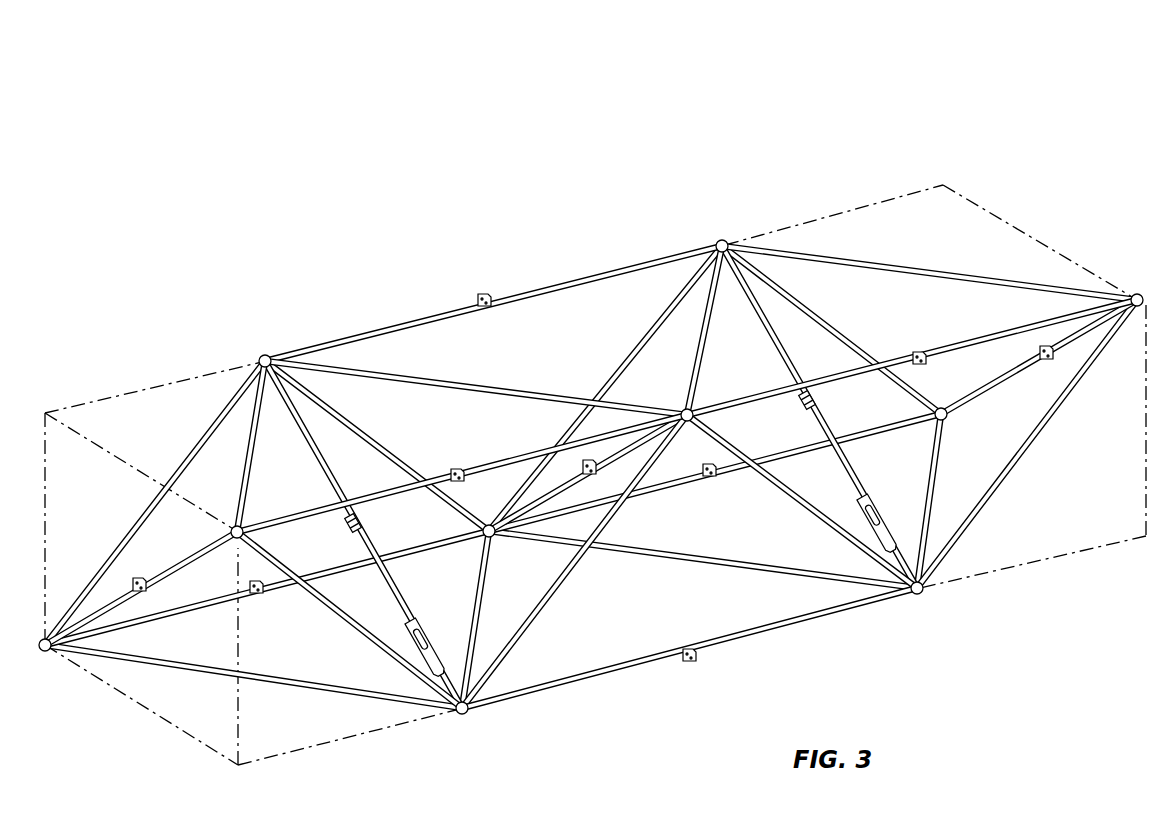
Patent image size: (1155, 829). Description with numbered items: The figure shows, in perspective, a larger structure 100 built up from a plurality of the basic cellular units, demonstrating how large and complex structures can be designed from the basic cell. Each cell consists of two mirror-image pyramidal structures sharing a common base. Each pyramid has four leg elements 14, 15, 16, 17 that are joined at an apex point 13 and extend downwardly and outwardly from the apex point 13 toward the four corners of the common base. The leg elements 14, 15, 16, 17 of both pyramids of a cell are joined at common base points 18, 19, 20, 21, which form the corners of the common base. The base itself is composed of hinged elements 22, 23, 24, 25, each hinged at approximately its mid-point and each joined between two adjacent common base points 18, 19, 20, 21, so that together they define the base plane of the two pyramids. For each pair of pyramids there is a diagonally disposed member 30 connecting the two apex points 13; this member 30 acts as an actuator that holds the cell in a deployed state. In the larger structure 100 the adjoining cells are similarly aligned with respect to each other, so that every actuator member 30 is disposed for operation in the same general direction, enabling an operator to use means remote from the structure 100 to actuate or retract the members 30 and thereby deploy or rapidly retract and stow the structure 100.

The larger structure 100 is at (326, 283).
The apex point 13 is at (258, 355).
The leg element 14 is at (190, 454).
The leg element 15 is at (246, 469).
The leg element 16 is at (371, 443).
The leg element 17 is at (417, 377).
The common base point 18 is at (494, 538).
The common base point 19 is at (40, 652).
The common base point 20 is at (229, 531).
The common base point 21 is at (682, 408).
The hinged element 22 is at (588, 476).
The hinged element 23 is at (418, 551).
The hinged element 24 is at (160, 575).
The hinged element 25 is at (494, 462).
The diagonally disposed member 30 is at (326, 471).